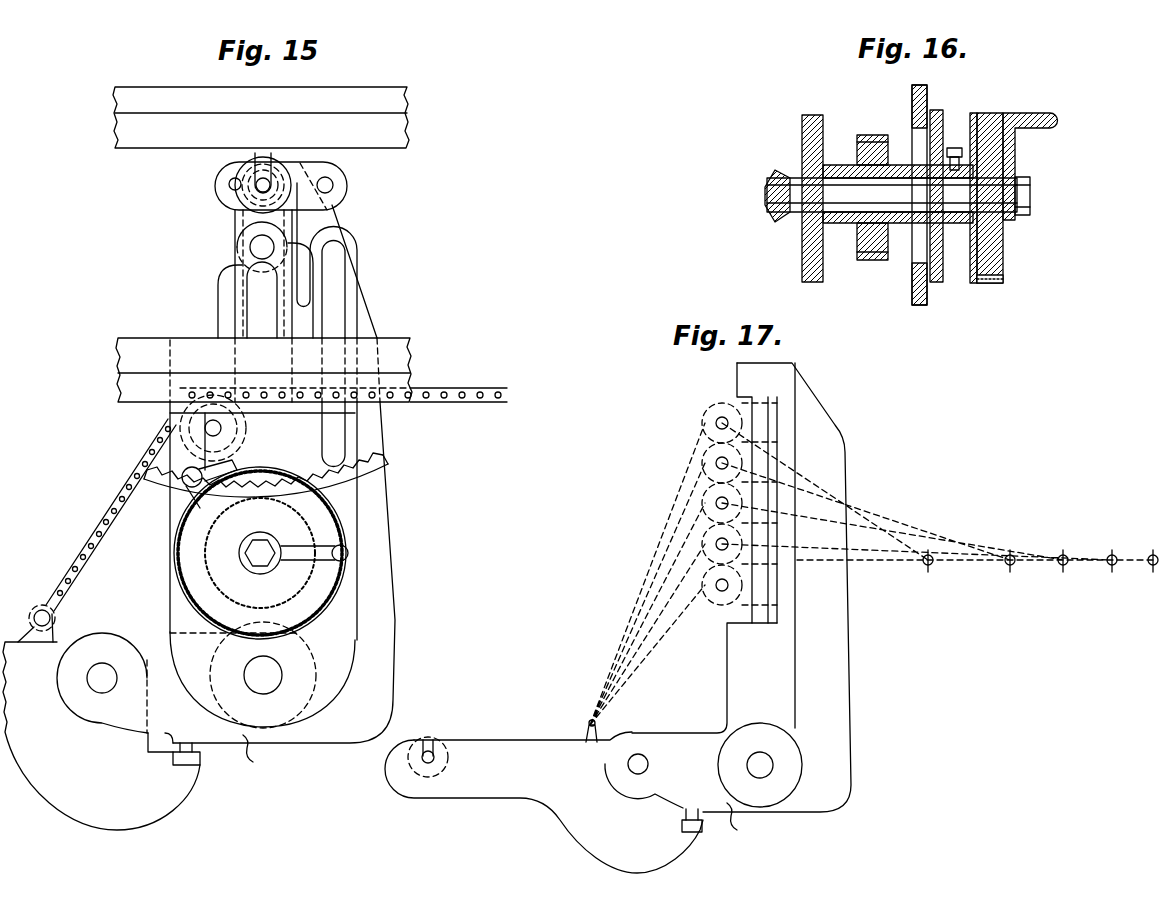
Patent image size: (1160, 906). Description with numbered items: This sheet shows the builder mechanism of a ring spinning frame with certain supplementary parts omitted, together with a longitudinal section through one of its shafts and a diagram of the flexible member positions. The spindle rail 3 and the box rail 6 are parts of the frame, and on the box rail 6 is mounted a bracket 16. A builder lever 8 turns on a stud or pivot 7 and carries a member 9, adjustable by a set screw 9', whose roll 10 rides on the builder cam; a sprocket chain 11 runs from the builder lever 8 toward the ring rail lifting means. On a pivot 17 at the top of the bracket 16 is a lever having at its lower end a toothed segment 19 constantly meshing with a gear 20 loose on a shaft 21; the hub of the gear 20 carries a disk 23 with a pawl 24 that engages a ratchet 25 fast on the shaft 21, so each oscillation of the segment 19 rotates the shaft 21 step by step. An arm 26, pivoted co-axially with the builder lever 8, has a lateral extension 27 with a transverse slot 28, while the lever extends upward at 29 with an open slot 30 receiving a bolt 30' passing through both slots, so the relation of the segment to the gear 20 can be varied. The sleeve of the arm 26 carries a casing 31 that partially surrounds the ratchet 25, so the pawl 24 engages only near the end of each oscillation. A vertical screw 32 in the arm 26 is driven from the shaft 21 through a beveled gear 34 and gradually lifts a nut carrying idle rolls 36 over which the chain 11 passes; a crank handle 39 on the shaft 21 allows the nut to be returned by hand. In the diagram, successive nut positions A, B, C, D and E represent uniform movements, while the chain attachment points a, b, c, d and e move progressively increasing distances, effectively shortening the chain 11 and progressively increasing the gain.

In FIG. 15, the spindle rail 3 is at (392, 130).
In FIG. 15, the box rail 6 is at (400, 355).
In FIG. 15, the stud or pivot 7 is at (276, 680).
In FIG. 15, the builder lever 8 is at (256, 750).
In FIG. 17, the builder lever 8 is at (739, 821).
In FIG. 15, the member 9 is at (101, 731).
In FIG. 17, the member 9 is at (544, 802).
In FIG. 15, the set screw 9' is at (208, 767).
In FIG. 17, the set screw 9' is at (707, 832).
In FIG. 17, the roll 10 is at (432, 746).
In FIG. 15, the sprocket chain 11 is at (433, 392).
In FIG. 15, the bracket 16 is at (225, 288).
In FIG. 16, the bracket 16 is at (913, 93).
In FIG. 15, the pivot or stud 17 is at (250, 247).
In FIG. 15, the toothed segment 19 is at (336, 478).
In FIG. 15, the gear 20 is at (318, 620).
In FIG. 16, the gear 20 is at (870, 140).
In FIG. 16, the shaft 21 is at (843, 192).
In FIG. 16, the disk 23 is at (940, 108).
In FIG. 15, the pawl 24 is at (207, 480).
In FIG. 15, the ratchet 25 is at (336, 538).
In FIG. 16, the ratchet 25 is at (988, 120).
In FIG. 15, the arm 26 is at (380, 685).
In FIG. 16, the arm 26 is at (806, 258).
In FIG. 17, the arm 26 is at (840, 767).
In FIG. 15, the lateral extension 27 is at (338, 178).
In FIG. 15, the transverse slot 28 is at (333, 185).
In FIG. 15, the upward extension of lever 29 is at (282, 165).
In FIG. 15, the open slot 30 is at (246, 156).
In FIG. 15, the bolt 30' is at (271, 152).
In FIG. 15, the casing 31 is at (178, 575).
In FIG. 16, the casing 31 is at (990, 283).
In FIG. 17, the threaded shaft or screw 32 is at (762, 413).
In FIG. 16, the beveled gear 34 is at (777, 172).
In FIG. 15, the idle rolls 36 is at (172, 430).
In FIG. 15, the crank handle 39 is at (336, 567).
In FIG. 16, the crank handle 39 is at (1033, 120).
In FIG. 17, the nut position A is at (722, 585).
In FIG. 17, the nut position B is at (722, 544).
In FIG. 17, the nut position C is at (722, 503).
In FIG. 17, the nut position D is at (722, 463).
In FIG. 17, the nut position E is at (722, 423).
In FIG. 17, the chain attachment point a is at (1150, 570).
In FIG. 17, the chain attachment point b is at (1111, 570).
In FIG. 17, the chain attachment point c is at (1062, 570).
In FIG. 17, the chain attachment point d is at (1008, 570).
In FIG. 17, the chain attachment point e is at (926, 570).
In FIG. 17, the guide point F is at (619, 718).